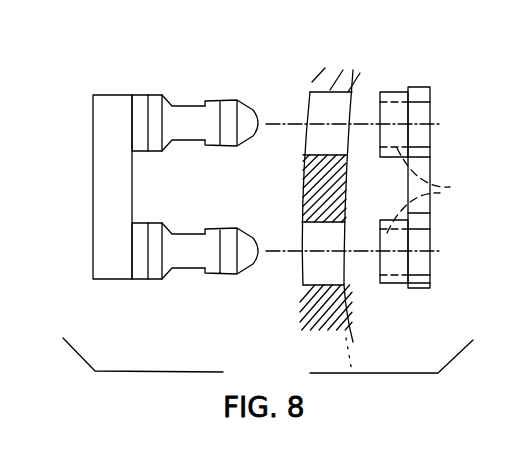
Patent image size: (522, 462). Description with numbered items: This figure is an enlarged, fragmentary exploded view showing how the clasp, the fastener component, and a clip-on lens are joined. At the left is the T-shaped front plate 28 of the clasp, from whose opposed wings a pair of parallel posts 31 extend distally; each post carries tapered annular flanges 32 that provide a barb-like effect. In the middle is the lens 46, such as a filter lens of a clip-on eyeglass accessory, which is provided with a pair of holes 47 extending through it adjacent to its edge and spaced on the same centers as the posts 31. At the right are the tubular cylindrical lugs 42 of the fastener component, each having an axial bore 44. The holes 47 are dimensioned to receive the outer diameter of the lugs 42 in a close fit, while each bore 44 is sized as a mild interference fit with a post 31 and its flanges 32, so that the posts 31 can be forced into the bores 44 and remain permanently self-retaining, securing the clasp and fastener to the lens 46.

The T-shaped front plate 28 is at (93, 166).
The post 31 is at (183, 105).
The tapered annular flange 32 is at (245, 92).
The tubular cylindrical lug 42 is at (387, 92).
The bore 44 is at (437, 187).
The lens 46 is at (341, 220).
The hole 47 is at (333, 113).